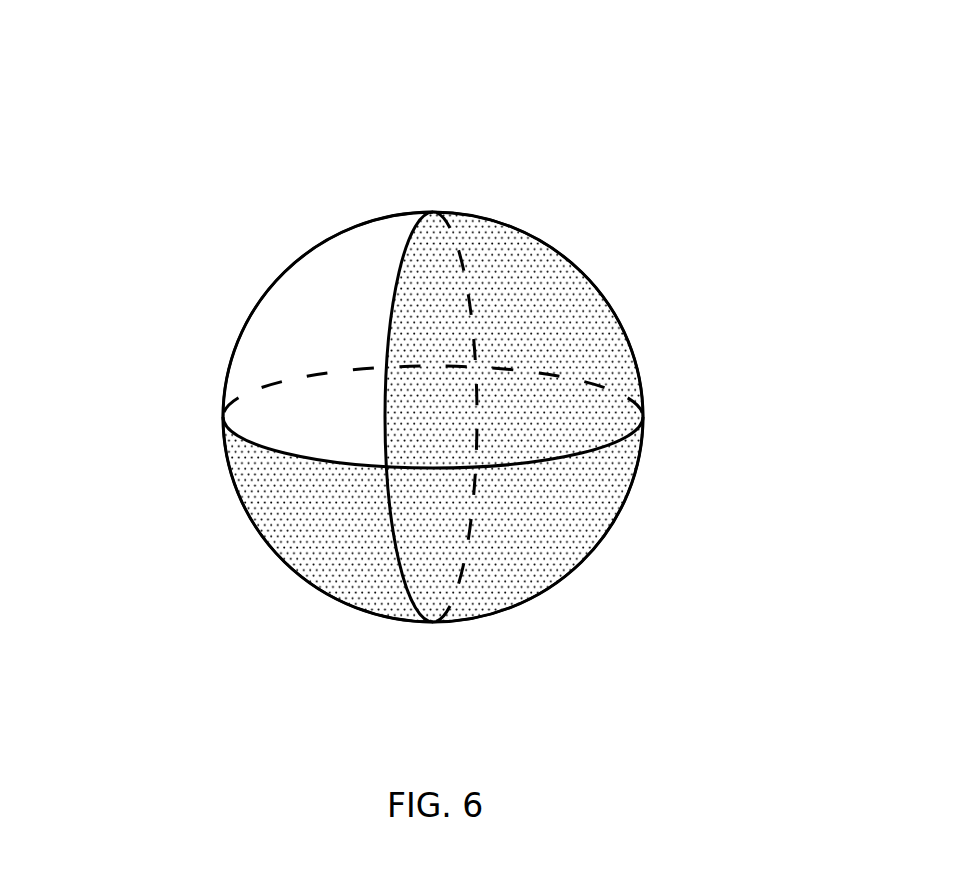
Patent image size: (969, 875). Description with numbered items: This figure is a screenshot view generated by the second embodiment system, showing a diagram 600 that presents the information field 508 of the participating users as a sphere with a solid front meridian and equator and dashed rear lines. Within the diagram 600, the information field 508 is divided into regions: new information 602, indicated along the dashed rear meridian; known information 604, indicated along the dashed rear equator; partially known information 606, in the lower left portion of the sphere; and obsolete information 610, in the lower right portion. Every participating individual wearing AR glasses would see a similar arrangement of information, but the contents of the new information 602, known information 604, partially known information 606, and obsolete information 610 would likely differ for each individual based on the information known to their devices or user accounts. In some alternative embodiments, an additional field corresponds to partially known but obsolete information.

The diagram 600 is at (657, 69).
The information field 508 is at (290, 568).
The new information 602 is at (473, 328).
The known information 604 is at (340, 366).
The partially known information 606 is at (298, 506).
The obsolete information 610 is at (525, 514).